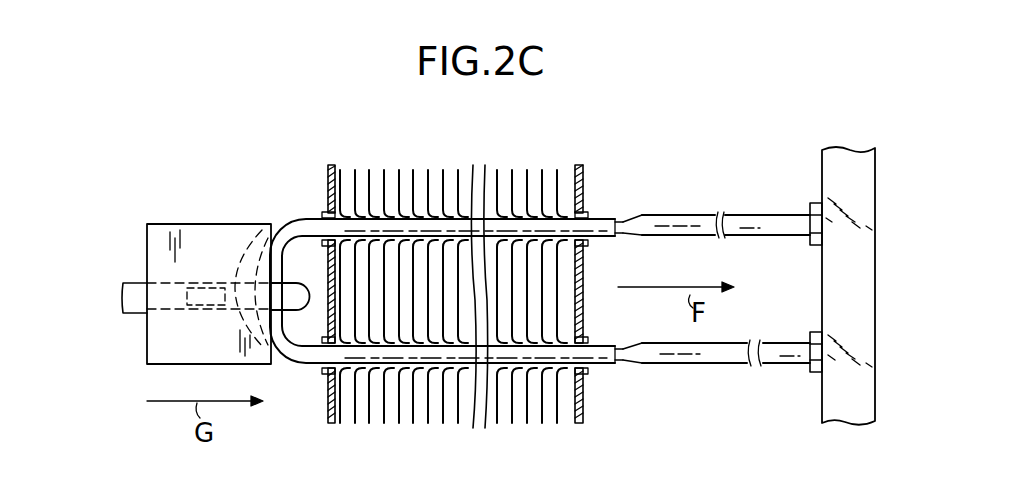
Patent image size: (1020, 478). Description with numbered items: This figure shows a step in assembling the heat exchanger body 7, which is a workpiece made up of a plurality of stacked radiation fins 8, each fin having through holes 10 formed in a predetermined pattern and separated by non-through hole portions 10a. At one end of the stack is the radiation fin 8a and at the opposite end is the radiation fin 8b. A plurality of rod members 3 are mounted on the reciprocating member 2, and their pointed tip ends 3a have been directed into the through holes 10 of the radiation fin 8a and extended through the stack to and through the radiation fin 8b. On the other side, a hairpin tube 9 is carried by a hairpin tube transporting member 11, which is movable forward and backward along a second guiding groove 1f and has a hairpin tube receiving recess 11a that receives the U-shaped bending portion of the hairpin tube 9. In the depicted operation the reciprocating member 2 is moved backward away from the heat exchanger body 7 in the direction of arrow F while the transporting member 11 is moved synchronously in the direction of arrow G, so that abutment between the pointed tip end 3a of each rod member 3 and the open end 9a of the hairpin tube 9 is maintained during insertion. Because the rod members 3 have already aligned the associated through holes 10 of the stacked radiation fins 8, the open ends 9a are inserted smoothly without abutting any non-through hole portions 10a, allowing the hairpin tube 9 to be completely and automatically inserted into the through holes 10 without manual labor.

The second guiding groove 1f is at (133, 283).
The reciprocating member 2 is at (830, 178).
The rod member 3 is at (690, 215).
The pointed tip end 3a is at (622, 222).
The heat exchanger body 7 is at (432, 408).
The radiation fin 8 is at (478, 290).
The radiation fin closer to one end 8a is at (578, 165).
The radiation fin closer to opposite end 8b is at (333, 165).
The hairpin tube 9 is at (300, 222).
The open end 9a is at (620, 236).
The through hole 10 is at (588, 140).
The non-through hole portion 10a is at (515, 372).
The hairpin tube transporting member 11 is at (216, 235).
The hairpin tube receiving recess 11a is at (245, 327).